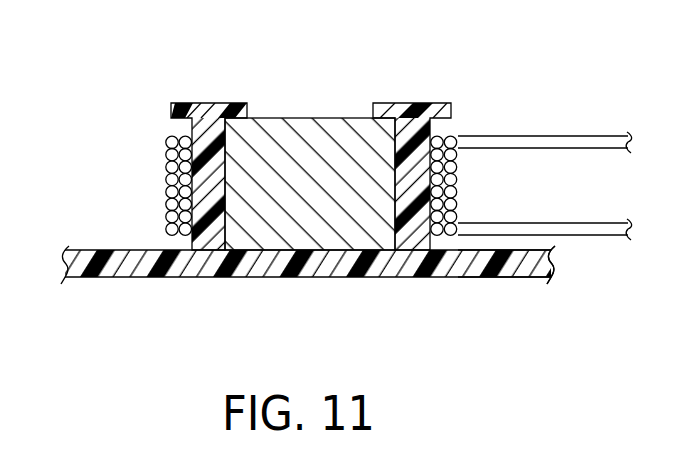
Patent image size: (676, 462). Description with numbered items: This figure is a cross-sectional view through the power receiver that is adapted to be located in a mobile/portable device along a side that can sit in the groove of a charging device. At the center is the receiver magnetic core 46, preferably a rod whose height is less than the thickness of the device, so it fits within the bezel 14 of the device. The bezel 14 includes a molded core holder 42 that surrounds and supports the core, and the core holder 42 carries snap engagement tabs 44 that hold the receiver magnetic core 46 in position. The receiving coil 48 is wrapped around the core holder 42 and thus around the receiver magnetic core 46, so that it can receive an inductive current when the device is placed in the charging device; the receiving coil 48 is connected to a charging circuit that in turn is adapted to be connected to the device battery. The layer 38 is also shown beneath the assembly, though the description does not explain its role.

The bezel 14 is at (508, 277).
The substrate 38 is at (117, 277).
The molded core holder 42 is at (207, 103).
The snap engagement tabs 44 is at (375, 103).
The receiver magnetic core 46 is at (312, 218).
The receiving coil 48 is at (520, 136).